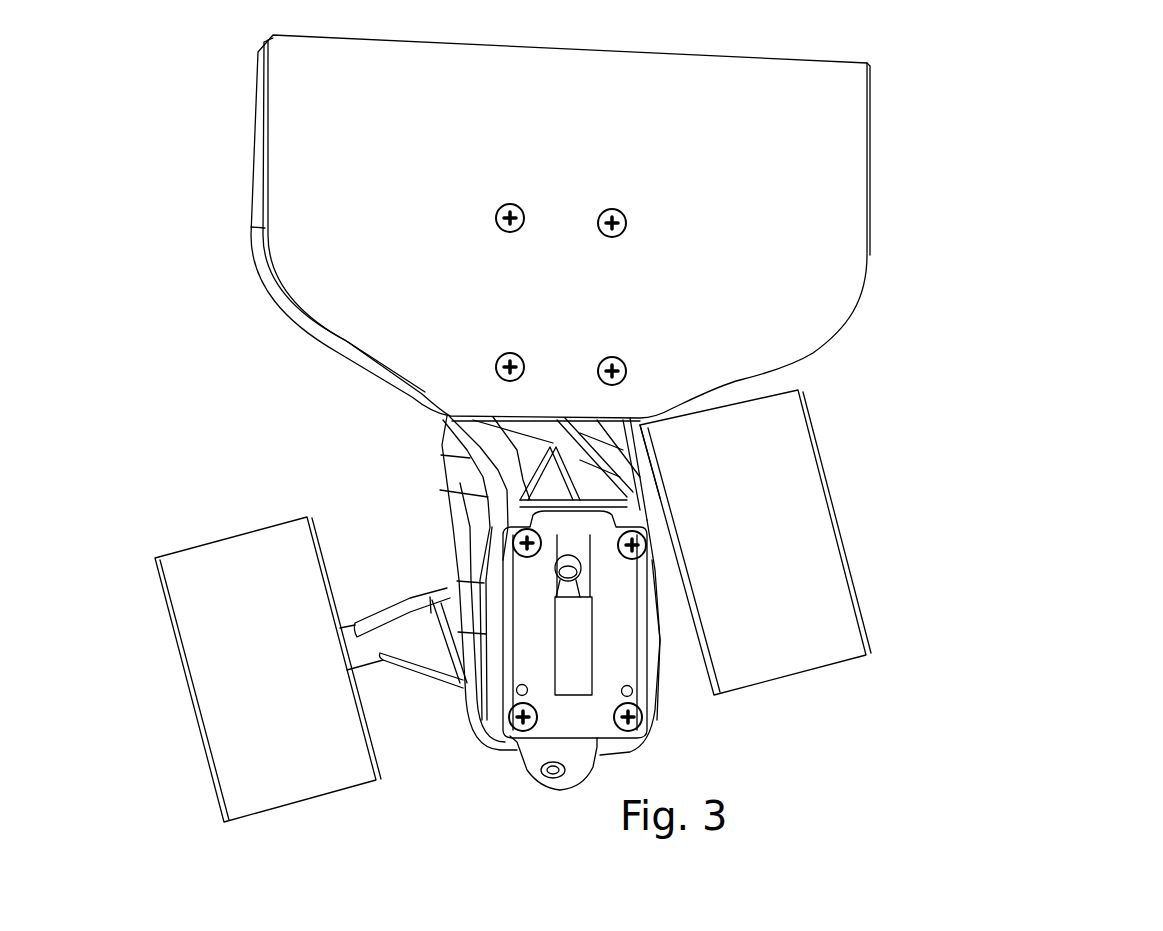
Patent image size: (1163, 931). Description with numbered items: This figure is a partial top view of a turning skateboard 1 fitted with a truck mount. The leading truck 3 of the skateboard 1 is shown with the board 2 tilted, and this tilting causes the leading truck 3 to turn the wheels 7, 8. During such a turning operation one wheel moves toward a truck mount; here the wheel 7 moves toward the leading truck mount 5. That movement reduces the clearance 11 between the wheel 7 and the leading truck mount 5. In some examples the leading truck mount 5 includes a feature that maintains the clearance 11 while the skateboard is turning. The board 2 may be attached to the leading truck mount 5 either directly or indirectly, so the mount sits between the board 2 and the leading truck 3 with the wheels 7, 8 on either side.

The skateboard 1 is at (946, 96).
The board 2 is at (713, 331).
The leading truck 3 is at (949, 318).
The leading truck mount 5 is at (444, 461).
The wheel 7 is at (779, 626).
The wheel 8 is at (222, 598).
The clearance 11 is at (654, 427).